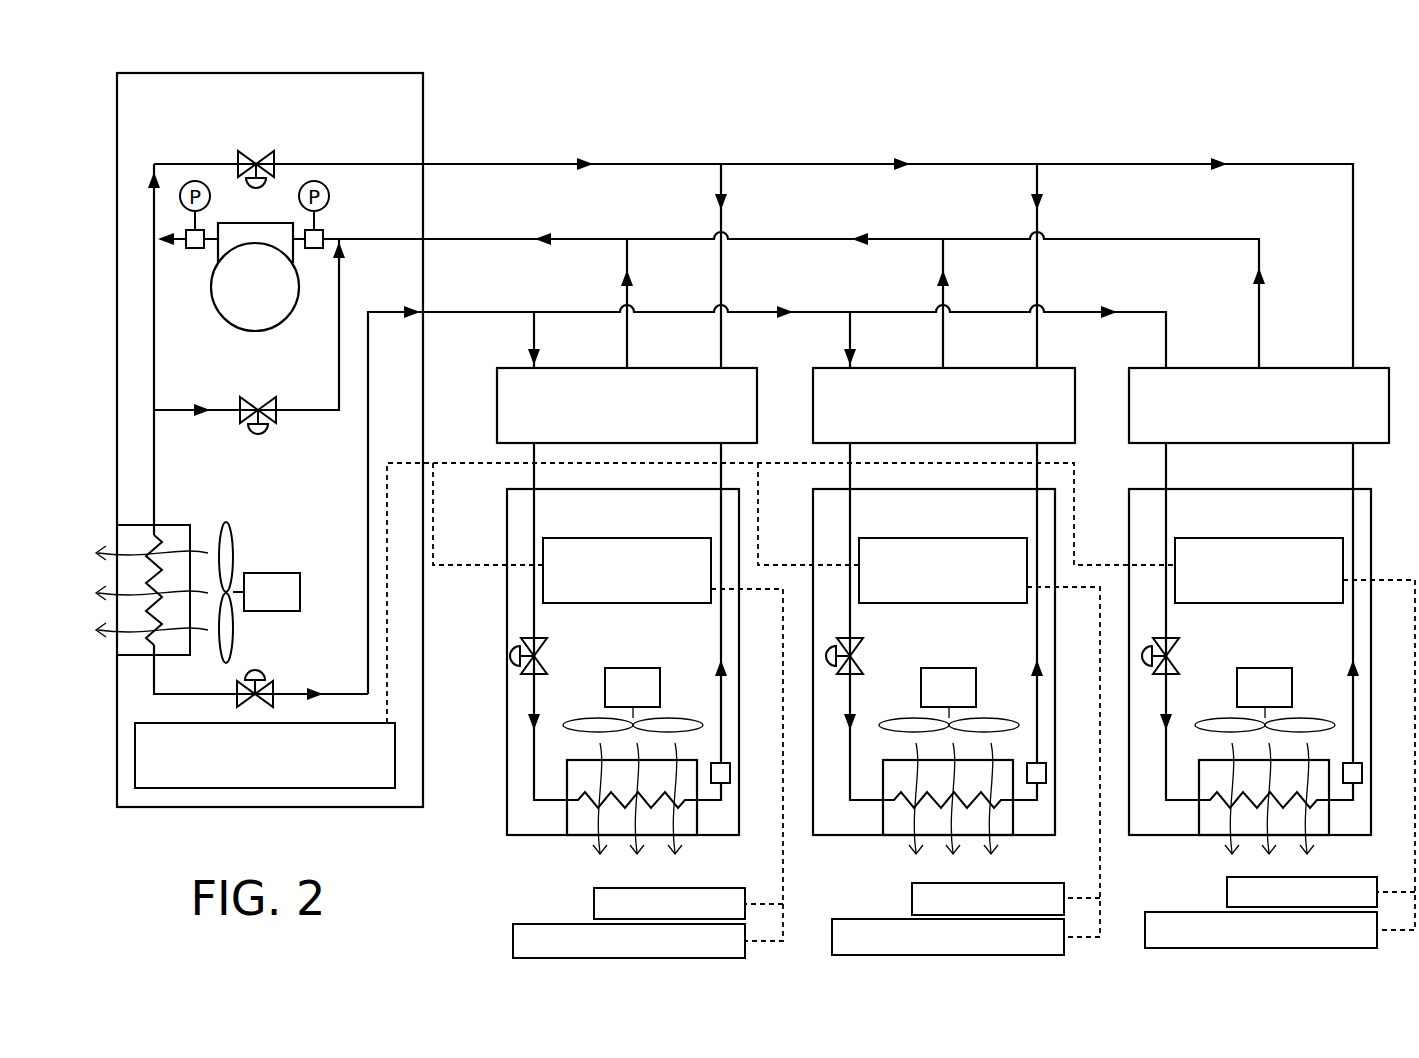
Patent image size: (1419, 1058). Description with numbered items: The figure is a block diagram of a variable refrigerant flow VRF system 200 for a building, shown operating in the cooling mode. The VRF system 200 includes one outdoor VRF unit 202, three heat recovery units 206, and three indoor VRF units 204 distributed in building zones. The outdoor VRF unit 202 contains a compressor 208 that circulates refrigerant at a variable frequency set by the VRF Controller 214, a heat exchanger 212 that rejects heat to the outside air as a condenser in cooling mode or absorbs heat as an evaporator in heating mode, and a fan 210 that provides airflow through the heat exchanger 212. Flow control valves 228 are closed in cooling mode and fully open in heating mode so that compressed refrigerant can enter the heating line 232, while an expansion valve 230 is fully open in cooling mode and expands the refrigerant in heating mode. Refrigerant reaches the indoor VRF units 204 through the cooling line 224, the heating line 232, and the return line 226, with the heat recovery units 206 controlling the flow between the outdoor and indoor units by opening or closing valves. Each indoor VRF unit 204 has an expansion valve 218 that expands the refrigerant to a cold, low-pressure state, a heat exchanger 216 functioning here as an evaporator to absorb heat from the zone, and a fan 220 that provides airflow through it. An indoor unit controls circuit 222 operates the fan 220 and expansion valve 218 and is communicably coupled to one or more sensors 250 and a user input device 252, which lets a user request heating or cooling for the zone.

The VRF system 200 is at (1085, 85).
The outdoor VRF unit 202 is at (152, 73).
The indoor VRF unit 204 is at (517, 489).
The heat recovery unit 206 is at (742, 368).
The compressor 208 is at (226, 226).
The fan 210 is at (280, 573).
The heat exchanger 212 is at (172, 527).
The VRF Controller 214 is at (384, 760).
The heat exchanger 216 is at (694, 838).
The expansion valve 218 is at (544, 641).
The fan 220 is at (627, 668).
The indoor unit controls circuit 222 is at (637, 603).
The cooling line 224 is at (750, 312).
The return line 226 is at (588, 239).
The flow control valve 228 is at (256, 163).
The expansion valve 230 is at (257, 668).
The heating line 232 is at (636, 164).
The sensors 250 is at (594, 900).
The user input device 252 is at (513, 941).